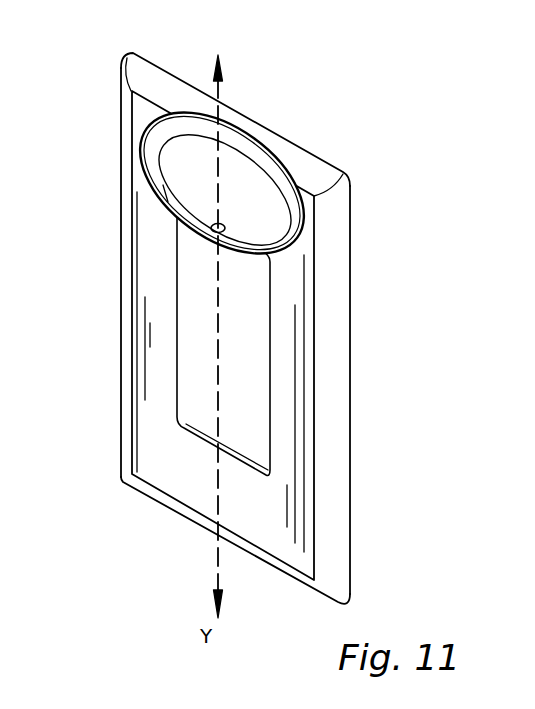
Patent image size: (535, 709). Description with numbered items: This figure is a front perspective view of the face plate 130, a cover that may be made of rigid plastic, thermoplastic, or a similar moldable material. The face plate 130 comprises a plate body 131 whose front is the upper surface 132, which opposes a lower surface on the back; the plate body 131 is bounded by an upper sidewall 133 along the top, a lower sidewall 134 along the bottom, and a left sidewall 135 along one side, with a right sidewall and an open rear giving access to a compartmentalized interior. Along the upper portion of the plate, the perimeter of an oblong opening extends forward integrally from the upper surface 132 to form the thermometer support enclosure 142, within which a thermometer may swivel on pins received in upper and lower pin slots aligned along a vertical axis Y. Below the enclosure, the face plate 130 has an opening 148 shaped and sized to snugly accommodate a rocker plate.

The face plate 130 is at (216, 333).
The plate body 131 is at (120, 143).
The upper surface 132 is at (142, 267).
The upper sidewall 133 is at (153, 81).
The lower sidewall 134 is at (298, 583).
The left sidewall 135 is at (338, 403).
The thermometer support enclosure 142 is at (167, 208).
The opening 148 is at (205, 343).